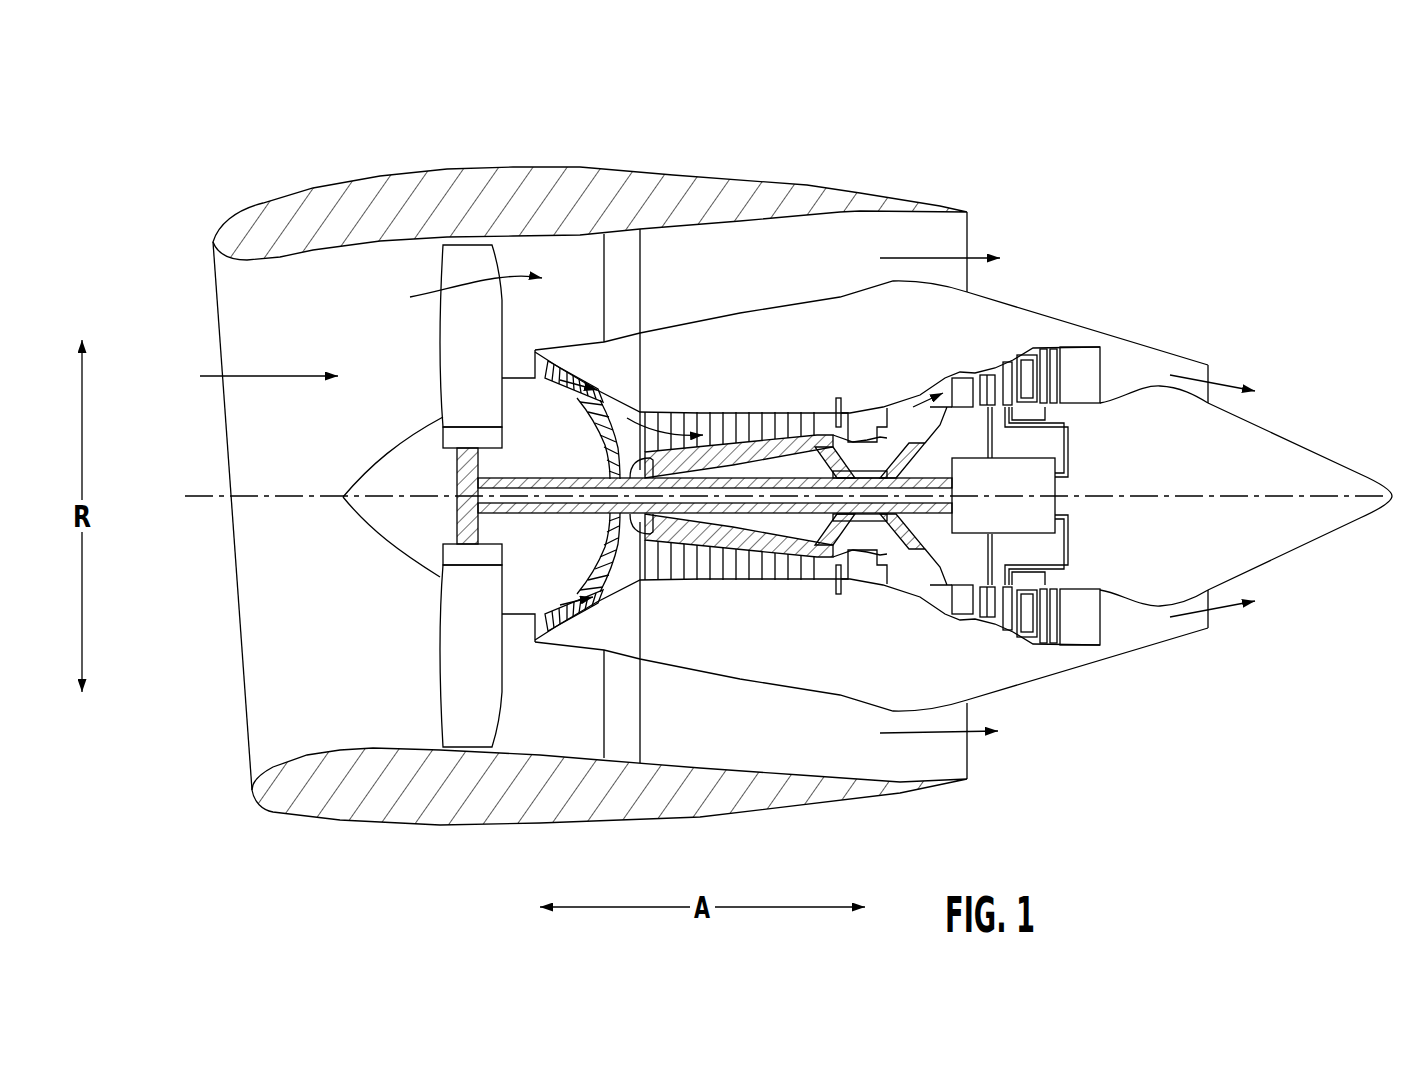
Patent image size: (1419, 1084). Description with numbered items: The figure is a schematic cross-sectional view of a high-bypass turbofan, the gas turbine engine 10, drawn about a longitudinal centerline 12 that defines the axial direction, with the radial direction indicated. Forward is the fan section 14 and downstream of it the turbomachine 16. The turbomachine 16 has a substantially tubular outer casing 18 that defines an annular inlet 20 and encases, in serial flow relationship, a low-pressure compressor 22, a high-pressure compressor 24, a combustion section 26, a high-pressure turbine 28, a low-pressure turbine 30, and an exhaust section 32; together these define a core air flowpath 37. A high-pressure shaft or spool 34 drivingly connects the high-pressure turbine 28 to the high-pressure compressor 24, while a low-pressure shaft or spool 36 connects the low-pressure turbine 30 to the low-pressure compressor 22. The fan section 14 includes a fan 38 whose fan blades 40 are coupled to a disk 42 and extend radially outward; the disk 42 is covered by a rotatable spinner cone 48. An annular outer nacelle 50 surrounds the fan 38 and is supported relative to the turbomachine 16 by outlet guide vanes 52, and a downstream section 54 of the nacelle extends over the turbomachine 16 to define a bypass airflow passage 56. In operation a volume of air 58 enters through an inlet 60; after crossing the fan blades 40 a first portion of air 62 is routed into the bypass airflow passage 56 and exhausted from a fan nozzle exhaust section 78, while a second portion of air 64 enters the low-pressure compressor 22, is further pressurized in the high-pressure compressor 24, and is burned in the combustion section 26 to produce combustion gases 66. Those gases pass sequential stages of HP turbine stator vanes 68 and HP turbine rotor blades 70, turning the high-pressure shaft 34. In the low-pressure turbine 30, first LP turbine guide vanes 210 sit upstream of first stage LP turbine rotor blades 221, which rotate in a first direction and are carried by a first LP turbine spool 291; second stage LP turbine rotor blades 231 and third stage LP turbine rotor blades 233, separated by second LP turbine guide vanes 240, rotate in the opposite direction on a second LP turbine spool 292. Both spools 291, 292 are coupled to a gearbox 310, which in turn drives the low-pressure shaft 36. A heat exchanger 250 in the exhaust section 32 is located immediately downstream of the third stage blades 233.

The gas turbine engine 10 is at (1140, 183).
The longitudinal centerline 12 is at (1307, 493).
The fan section 14 is at (490, 128).
The turbomachine 16 is at (822, 360).
The outer casing 18 is at (807, 693).
The annular inlet 20 is at (550, 625).
The low-pressure compressor 22 is at (597, 570).
The high-pressure compressor 24 is at (673, 572).
The combustion section 26 is at (853, 578).
The high-pressure turbine 28 is at (925, 583).
The low-pressure turbine 30 is at (1040, 652).
The exhaust section 32 is at (1125, 635).
The high-pressure shaft or spool 34 is at (893, 453).
The low-pressure shaft or spool 36 is at (585, 478).
The core air flowpath 37 is at (625, 577).
The fan 38 is at (402, 558).
The fan blades 40 is at (438, 677).
The disk 42 is at (463, 437).
The spinner cone 48 is at (357, 518).
The outer nacelle 50 is at (490, 824).
The outlet guide vanes 52 is at (641, 268).
The downstream section 54 is at (880, 210).
The bypass airflow passage 56 is at (798, 273).
The volume of air 58 is at (275, 372).
The inlet 60 is at (248, 732).
The first portion of air 62 is at (460, 277).
The second portion of air 64 is at (535, 365).
The combustion gases 66 is at (898, 405).
The HP turbine stator vanes 68 is at (877, 575).
The HP turbine rotor blades 70 is at (893, 553).
The fan nozzle exhaust section 78 is at (955, 237).
The first LP turbine guide vanes 210 is at (962, 385).
The first stage LP turbine rotor blades 221 is at (985, 380).
The second stage LP turbine rotor blades 231 is at (1006, 375).
The third stage LP turbine rotor blades 233 is at (1045, 362).
The second LP turbine guide vanes 240 is at (1025, 360).
The heat exchanger 250 is at (1088, 365).
The first LP turbine spool 291 is at (987, 450).
The second LP turbine spool 292 is at (1073, 437).
The gearbox 310 is at (1040, 483).